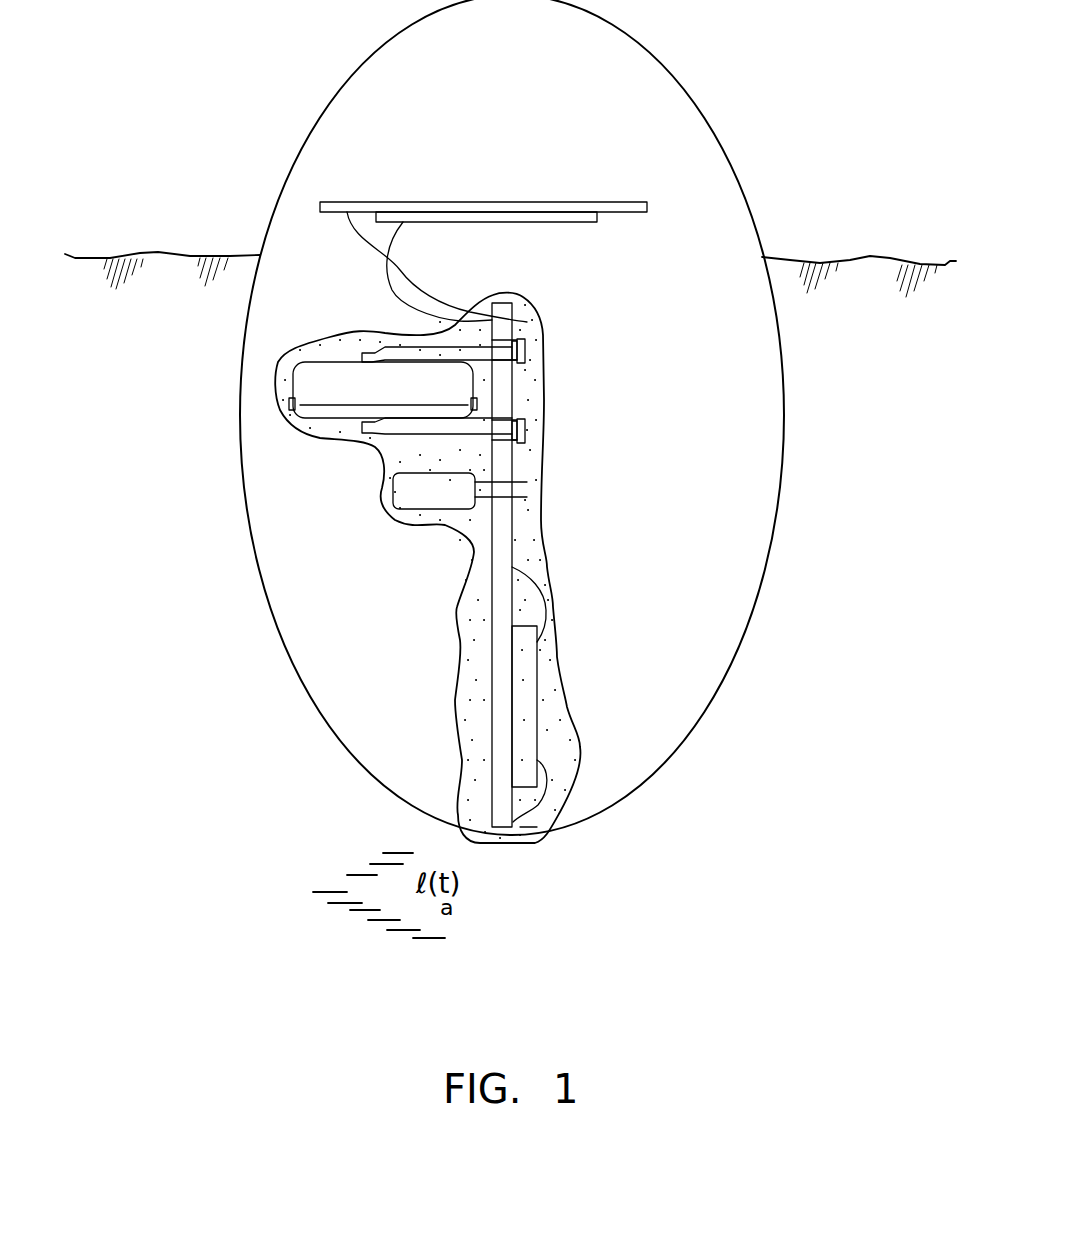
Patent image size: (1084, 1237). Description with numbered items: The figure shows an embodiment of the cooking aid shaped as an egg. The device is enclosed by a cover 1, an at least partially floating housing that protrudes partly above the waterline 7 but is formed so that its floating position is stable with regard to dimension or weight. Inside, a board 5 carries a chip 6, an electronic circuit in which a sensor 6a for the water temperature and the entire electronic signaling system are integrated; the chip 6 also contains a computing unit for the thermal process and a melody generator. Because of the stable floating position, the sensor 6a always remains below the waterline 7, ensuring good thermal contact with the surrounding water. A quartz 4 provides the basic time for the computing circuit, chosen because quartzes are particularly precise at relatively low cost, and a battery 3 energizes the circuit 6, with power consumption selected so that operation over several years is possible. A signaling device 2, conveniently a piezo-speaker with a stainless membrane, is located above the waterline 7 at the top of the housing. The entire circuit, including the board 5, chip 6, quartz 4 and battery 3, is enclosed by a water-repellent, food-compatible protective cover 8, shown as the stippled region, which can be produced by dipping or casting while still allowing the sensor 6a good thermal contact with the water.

The cover 1 is at (720, 143).
The signaling device 2 is at (523, 202).
The battery 3 is at (340, 363).
The quartz 4 is at (395, 487).
The board 5 is at (500, 540).
The chip 6 is at (523, 693).
The sensor 6a is at (533, 838).
The waterline 7 is at (162, 228).
The protective cover 8 is at (527, 460).